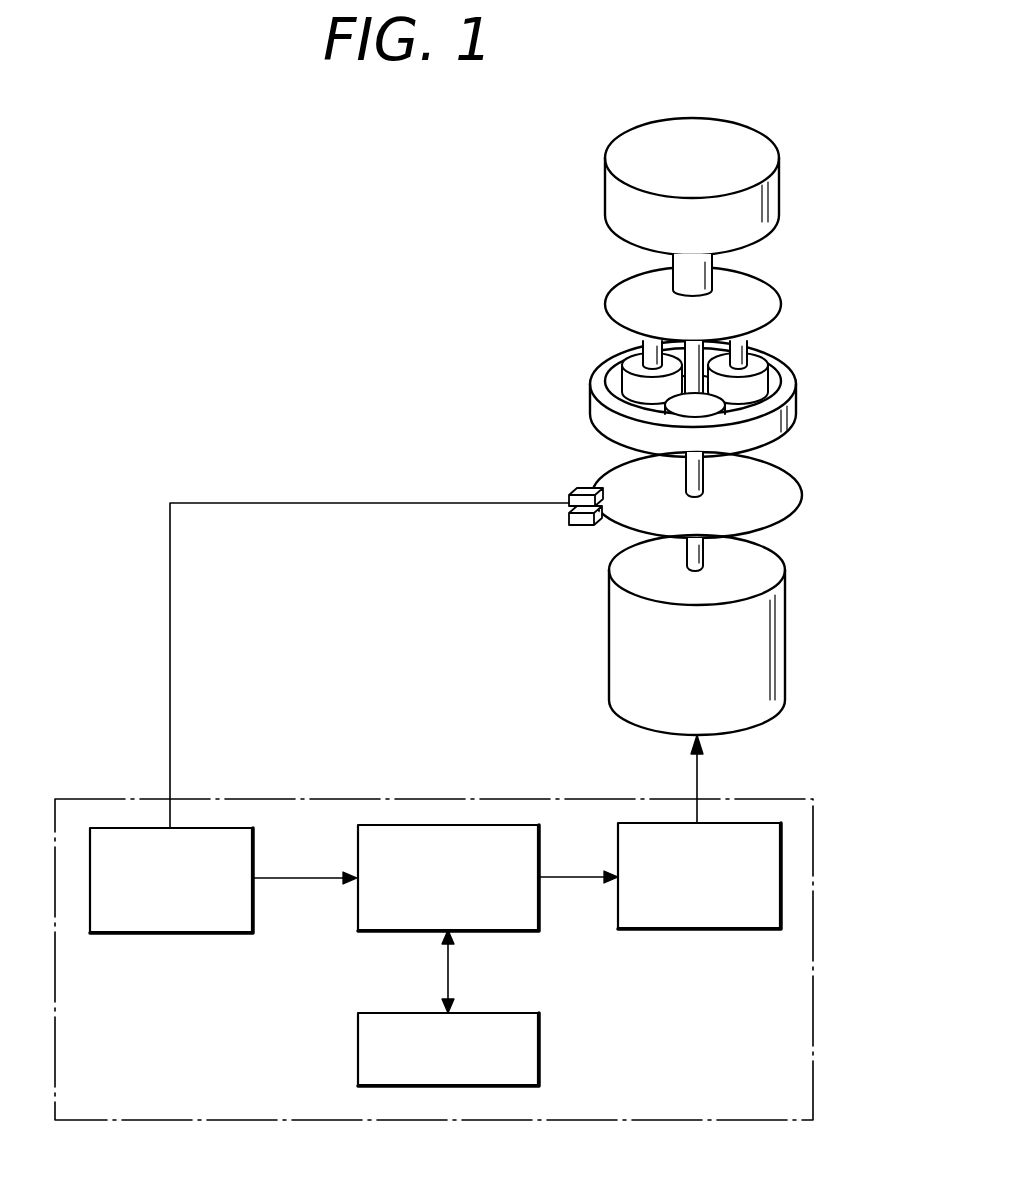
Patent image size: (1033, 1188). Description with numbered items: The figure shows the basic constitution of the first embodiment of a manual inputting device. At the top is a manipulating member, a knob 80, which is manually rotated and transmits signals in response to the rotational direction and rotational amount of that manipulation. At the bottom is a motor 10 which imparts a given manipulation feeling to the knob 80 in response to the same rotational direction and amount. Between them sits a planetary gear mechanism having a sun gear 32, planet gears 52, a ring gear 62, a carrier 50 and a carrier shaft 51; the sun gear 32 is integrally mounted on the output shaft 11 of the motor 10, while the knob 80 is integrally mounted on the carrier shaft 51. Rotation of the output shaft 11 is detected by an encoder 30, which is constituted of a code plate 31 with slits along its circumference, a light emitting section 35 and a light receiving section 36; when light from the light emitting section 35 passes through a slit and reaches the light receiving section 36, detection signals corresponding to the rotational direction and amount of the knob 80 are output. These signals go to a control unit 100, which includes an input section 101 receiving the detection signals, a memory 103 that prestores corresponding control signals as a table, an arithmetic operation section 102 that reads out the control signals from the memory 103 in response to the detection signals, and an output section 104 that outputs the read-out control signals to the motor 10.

The motor 10 is at (786, 642).
The output shaft 11 is at (705, 553).
The encoder 30 is at (708, 408).
The code plate 31 is at (797, 457).
The sun gear 32 is at (664, 381).
The light emitting section 35 is at (577, 530).
The light receiving section 36 is at (570, 491).
The carrier 50 is at (774, 311).
The carrier shaft 51 is at (713, 270).
The planet gears 52 is at (624, 360).
The ring gear 62 is at (591, 410).
The knob 80 is at (773, 138).
The control unit 100 is at (492, 811).
The input section 101 is at (165, 935).
The arithmetic operation section 102 is at (388, 933).
The memory 103 is at (540, 1041).
The output section 104 is at (738, 932).